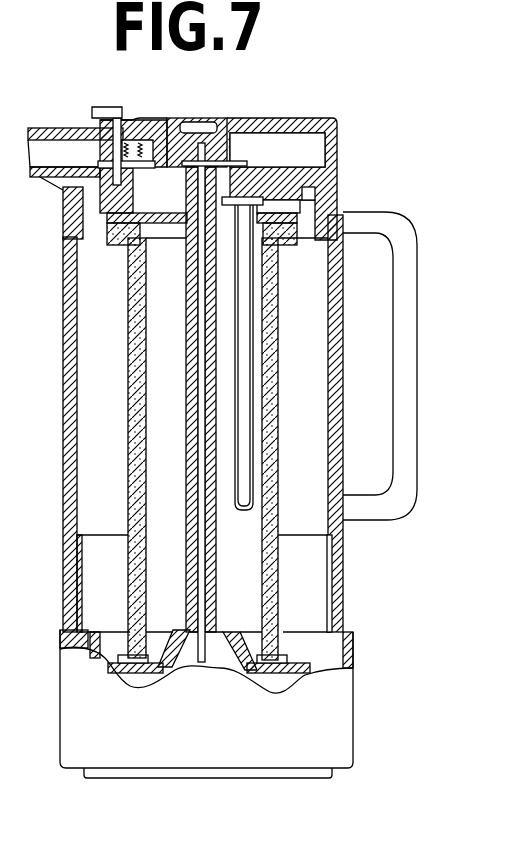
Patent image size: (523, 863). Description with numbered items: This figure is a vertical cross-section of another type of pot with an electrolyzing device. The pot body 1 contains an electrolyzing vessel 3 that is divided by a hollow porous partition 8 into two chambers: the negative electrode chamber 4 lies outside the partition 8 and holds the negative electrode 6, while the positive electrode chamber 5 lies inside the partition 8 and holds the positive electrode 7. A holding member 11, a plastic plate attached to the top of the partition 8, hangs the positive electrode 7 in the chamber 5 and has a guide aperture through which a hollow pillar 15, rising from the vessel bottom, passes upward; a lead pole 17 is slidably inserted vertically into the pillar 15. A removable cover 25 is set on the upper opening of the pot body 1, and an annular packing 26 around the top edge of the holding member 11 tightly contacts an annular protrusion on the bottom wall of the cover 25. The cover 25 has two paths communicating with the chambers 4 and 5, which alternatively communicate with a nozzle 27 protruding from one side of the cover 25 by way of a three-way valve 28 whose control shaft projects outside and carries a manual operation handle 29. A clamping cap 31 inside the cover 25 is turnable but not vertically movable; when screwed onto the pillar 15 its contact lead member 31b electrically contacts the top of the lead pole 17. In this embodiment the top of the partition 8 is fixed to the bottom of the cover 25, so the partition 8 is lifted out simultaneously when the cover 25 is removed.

The pot body 1 is at (67, 392).
The electrolyzing vessel 3 is at (308, 333).
The negative electrode chamber 4 is at (308, 426).
The positive electrode chamber 5 is at (172, 461).
The negative electrode 6 is at (84, 576).
The positive electrode 7 is at (247, 515).
The porous partition 8 is at (130, 362).
The holding member 11 is at (147, 214).
The hollow pillar 15 is at (190, 253).
The lead pole 17 is at (197, 312).
The cover 25 is at (285, 108).
The annular packing 26 is at (63, 190).
The nozzle 27 is at (47, 177).
The three-way valve 28 is at (121, 108).
The manual operation handle 29 is at (92, 113).
The clamping cap 31 is at (190, 125).
The contact lead member 31b is at (207, 140).